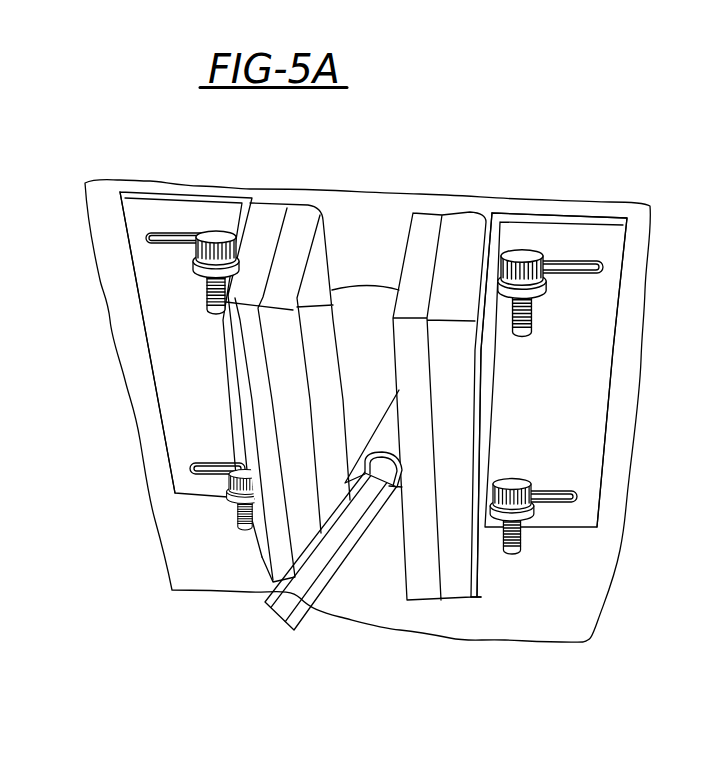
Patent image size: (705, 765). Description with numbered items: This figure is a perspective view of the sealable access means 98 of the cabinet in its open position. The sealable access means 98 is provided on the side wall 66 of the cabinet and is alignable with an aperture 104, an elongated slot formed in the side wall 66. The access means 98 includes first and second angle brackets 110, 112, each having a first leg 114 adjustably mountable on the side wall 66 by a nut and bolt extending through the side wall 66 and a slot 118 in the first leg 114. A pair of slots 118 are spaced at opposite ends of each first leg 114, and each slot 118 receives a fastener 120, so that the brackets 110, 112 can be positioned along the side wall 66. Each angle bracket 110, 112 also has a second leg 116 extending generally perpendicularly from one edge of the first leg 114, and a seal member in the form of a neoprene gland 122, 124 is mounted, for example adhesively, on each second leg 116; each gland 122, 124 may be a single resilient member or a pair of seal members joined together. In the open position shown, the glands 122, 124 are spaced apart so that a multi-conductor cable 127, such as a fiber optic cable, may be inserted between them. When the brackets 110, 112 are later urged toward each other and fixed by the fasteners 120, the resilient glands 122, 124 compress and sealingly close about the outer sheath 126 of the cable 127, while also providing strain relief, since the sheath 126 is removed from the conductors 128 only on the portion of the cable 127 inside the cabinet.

The side wall 66 is at (612, 213).
The sealable access means 98 is at (492, 606).
The aperture 104 is at (366, 284).
The first angle bracket 110 is at (618, 356).
The second angle bracket 112 is at (153, 464).
The first leg 114 is at (172, 416).
The second leg 116 is at (478, 555).
The slot 118 is at (185, 236).
The fastener 120 is at (537, 312).
The gland 122 is at (427, 597).
The gland 124 is at (300, 408).
The outer sheath 126 is at (383, 430).
The multi-conductor cable 127 is at (362, 566).
The conductors 128 is at (320, 597).